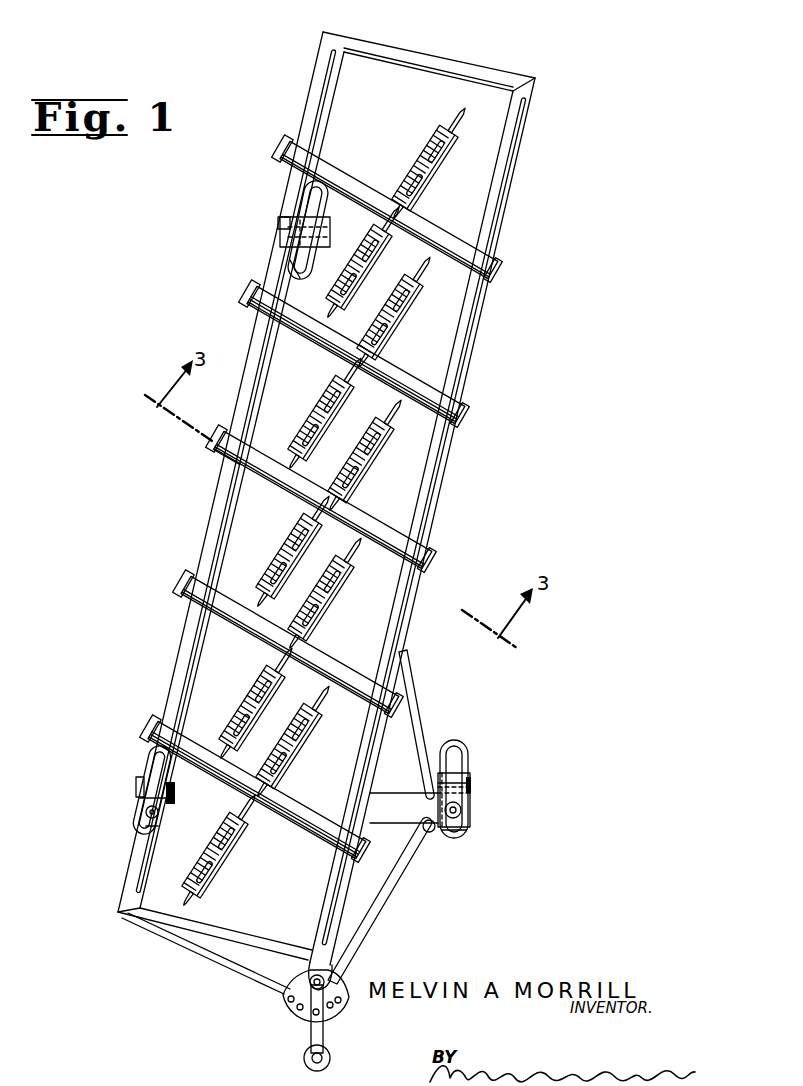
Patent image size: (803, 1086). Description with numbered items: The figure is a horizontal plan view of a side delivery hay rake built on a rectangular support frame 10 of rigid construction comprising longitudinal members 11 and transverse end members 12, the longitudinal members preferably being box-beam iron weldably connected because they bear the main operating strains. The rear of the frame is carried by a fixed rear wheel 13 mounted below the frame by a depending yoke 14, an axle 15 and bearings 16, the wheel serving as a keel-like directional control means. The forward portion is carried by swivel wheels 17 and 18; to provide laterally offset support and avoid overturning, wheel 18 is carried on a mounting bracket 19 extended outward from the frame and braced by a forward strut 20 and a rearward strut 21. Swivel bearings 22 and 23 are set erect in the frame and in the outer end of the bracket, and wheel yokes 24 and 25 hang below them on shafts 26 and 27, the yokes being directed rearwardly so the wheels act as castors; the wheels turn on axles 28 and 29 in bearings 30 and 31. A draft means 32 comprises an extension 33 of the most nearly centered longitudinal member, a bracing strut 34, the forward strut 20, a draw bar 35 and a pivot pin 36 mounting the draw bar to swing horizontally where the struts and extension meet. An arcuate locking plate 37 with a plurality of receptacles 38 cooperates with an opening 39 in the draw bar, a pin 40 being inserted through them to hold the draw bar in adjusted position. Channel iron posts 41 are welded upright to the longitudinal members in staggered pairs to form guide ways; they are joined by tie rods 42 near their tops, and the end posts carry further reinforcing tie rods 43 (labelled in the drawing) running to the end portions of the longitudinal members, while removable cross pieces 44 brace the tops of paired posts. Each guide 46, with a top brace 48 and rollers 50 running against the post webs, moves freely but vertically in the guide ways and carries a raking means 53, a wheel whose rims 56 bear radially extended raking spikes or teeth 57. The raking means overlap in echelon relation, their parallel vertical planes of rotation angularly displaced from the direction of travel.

The support frame 10 is at (210, 493).
The longitudinal members 11 is at (190, 618).
The transverse end members 12 is at (140, 922).
The fixed rear wheel 13 is at (306, 190).
The depending yoke 14 is at (273, 243).
The axle 15 is at (278, 232).
The bearings 16 is at (280, 220).
The swivel wheel 17 is at (142, 752).
The swivel wheel 18 is at (462, 753).
The mounting bracket 19 is at (435, 838).
The forward strut 20 is at (380, 925).
The rearward strut 21 is at (416, 703).
The swivel bearing 22 is at (143, 820).
The swivel bearing 23 is at (460, 810).
The wheel yoke 24 is at (140, 802).
The wheel yoke 25 is at (473, 800).
The shaft 26 is at (145, 812).
The shaft 27 is at (467, 827).
The axle 28 is at (142, 792).
The axle 29 is at (475, 793).
The bearing 30 is at (138, 785).
The bearing 31 is at (472, 790).
The draft means 32 is at (280, 998).
The extension 33 is at (325, 967).
The bracing strut 34 is at (250, 978).
The draw bar 35 is at (327, 1038).
The pivot pin 36 is at (327, 987).
The arcuate locking plate 37 is at (347, 1007).
The receptacles 38 is at (293, 1009).
The opening 39 is at (310, 1022).
The pin 40 is at (310, 1013).
The channel iron posts 41 is at (352, 855).
The tie rods 42 is at (407, 603).
The rail slot 43 is at (340, 897).
The cross pieces 44 is at (227, 462).
The guide 46 is at (192, 728).
The top brace 48 is at (307, 823).
The rollers 50 is at (170, 725).
The raking means 53 is at (197, 912).
The rims 56 is at (322, 742).
The raking spikes or teeth 57 is at (168, 898).